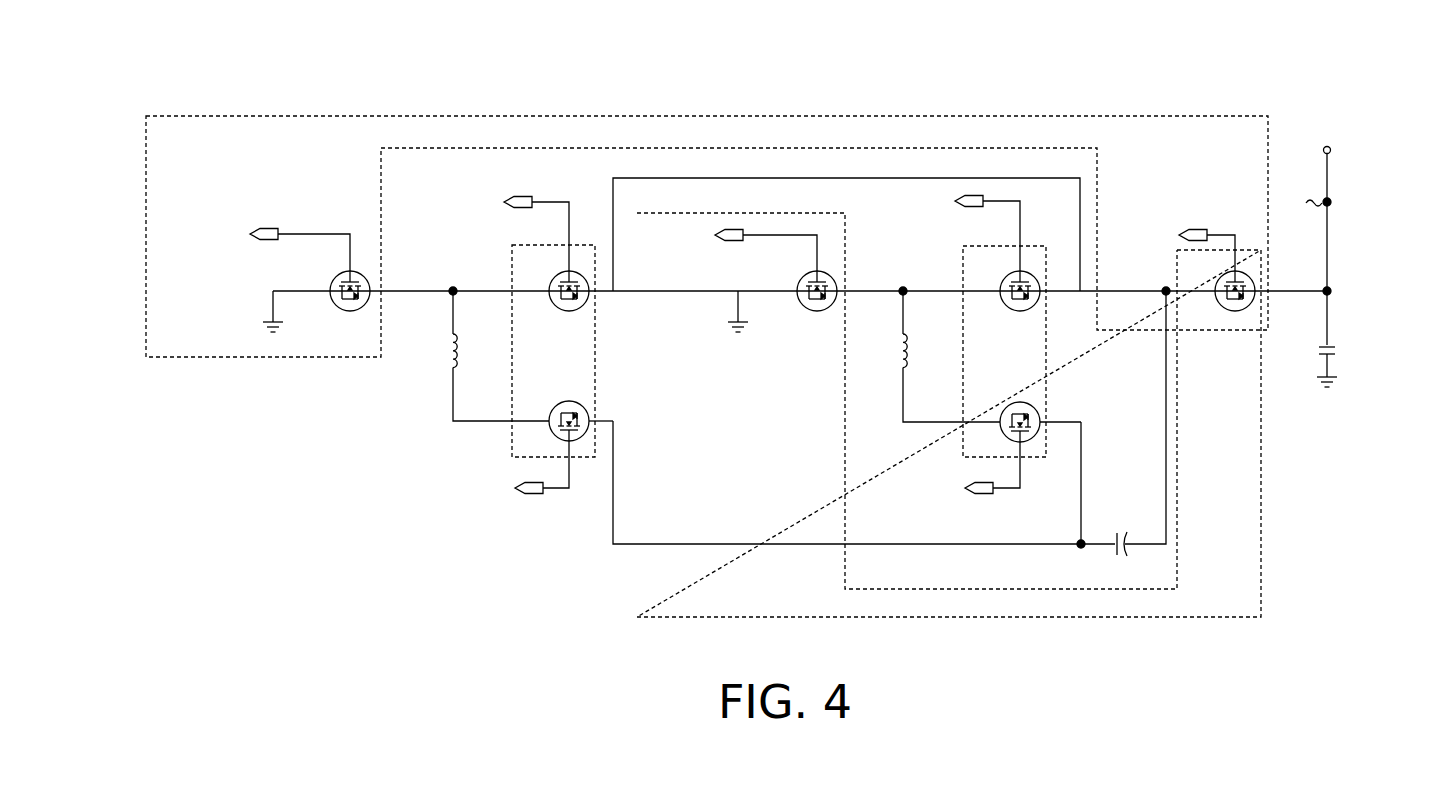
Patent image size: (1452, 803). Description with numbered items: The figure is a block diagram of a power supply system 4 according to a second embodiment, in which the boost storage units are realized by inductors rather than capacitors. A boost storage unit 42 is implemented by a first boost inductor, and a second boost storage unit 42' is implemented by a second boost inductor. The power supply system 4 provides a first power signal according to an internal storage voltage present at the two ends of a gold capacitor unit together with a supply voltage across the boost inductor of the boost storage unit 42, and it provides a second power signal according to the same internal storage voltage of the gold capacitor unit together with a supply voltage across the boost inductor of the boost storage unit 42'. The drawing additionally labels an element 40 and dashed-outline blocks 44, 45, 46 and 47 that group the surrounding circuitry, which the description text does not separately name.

The power supply system 4 is at (156, 63).
The power capacitor PC4 40 is at (1153, 505).
The boost storage unit 42 is at (966, 354).
The boost storage unit 42' is at (505, 353).
The switch unit Q7/Q9 44 is at (1040, 246).
The switch unit Q7'/Q9' 45 is at (587, 245).
The second converter stage 46 is at (716, 619).
The first converter stage 47 is at (711, 116).